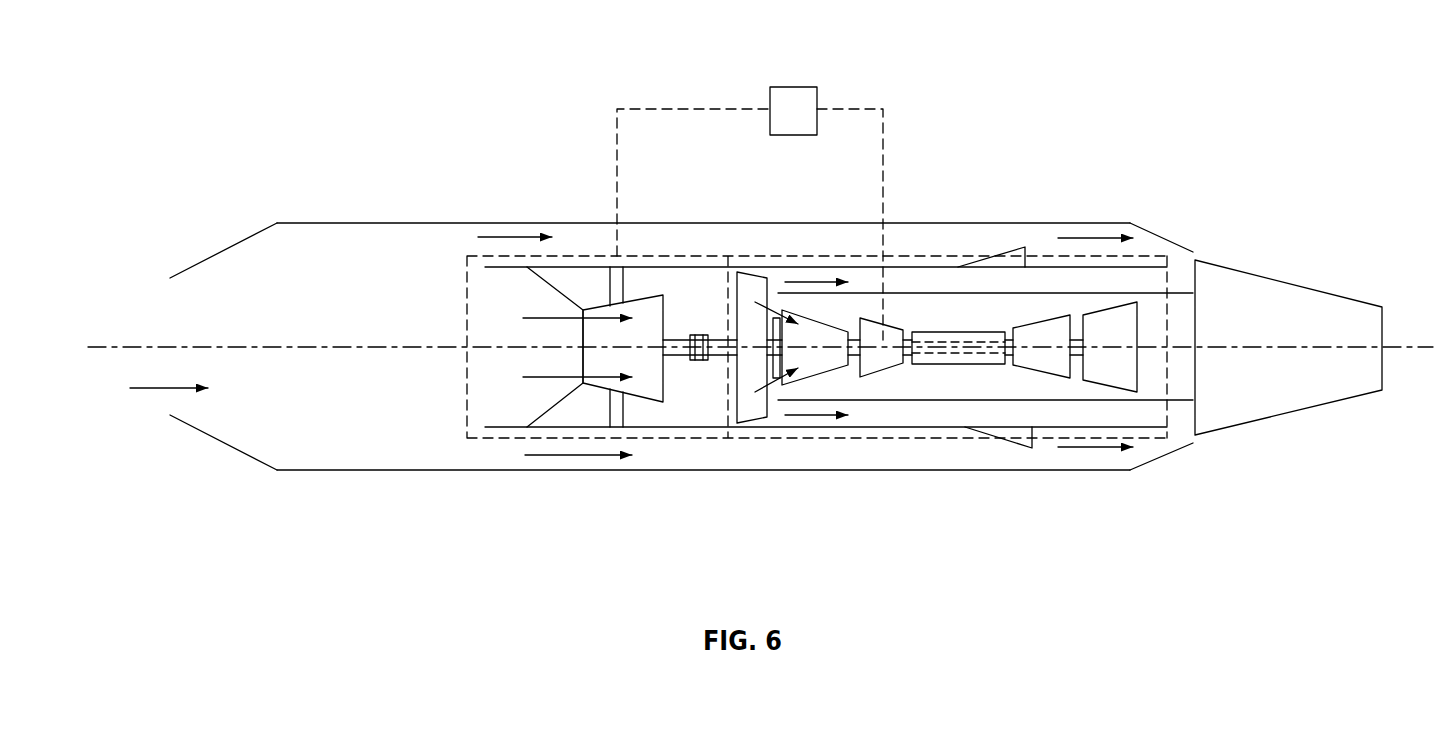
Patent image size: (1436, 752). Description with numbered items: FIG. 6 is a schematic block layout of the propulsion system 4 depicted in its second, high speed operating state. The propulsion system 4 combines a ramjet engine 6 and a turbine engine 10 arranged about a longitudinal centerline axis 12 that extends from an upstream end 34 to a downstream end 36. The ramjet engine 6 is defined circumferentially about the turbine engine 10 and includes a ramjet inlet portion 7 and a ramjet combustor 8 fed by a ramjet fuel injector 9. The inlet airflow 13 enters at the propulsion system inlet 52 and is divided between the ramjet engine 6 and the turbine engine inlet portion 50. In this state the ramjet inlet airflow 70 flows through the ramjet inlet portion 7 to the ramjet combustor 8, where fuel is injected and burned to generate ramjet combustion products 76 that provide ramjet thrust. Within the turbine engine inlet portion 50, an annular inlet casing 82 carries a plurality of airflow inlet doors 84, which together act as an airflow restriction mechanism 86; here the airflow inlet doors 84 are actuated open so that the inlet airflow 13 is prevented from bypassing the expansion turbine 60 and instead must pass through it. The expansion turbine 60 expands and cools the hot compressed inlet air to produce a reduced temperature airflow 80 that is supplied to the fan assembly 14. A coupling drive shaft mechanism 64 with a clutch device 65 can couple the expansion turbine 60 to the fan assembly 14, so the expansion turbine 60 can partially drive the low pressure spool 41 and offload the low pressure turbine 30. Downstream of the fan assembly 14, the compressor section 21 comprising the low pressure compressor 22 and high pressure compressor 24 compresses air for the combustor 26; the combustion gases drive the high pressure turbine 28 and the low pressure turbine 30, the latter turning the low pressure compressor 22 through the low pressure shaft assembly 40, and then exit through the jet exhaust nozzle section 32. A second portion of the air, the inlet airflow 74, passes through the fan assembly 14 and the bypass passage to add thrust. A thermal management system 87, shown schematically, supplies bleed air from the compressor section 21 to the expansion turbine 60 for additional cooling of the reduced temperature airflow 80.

The propulsion system 4 is at (955, 128).
The ramjet engine 6 is at (930, 243).
The ramjet inlet portion 7 is at (770, 243).
The ramjet combustor 8 is at (1045, 243).
The ramjet fuel injector 9 is at (1015, 255).
The turbine engine 10 is at (958, 257).
The longitudinal centerline axis 12 is at (1405, 347).
The inlet airflow 13 is at (160, 390).
The fan assembly 14 is at (742, 400).
The compressor section 21 is at (851, 320).
The low pressure compressor 22 is at (828, 357).
The high pressure compressor 24 is at (885, 360).
The combustor 26 is at (967, 364).
The high pressure turbine 28 is at (1045, 364).
The low pressure turbine 30 is at (1105, 368).
The jet exhaust nozzle section 32 is at (1300, 410).
The upstream end 34 is at (95, 316).
The downstream end 36 is at (1432, 383).
The low pressure shaft assembly 40 is at (868, 343).
The low pressure spool 41 is at (813, 384).
The turbine engine inlet portion 50 is at (500, 257).
The propulsion system inlet 52 is at (160, 287).
The expansion turbine 60 is at (640, 377).
The coupling drive shaft mechanism 64 is at (700, 333).
The clutch device 65 is at (697, 362).
The ramjet inlet airflow 70 is at (527, 237).
The inlet airflow 74 is at (825, 282).
The ramjet combustion products 76 is at (1103, 238).
The reduced temperature airflow 80 is at (542, 318).
The annular inlet casing 82 is at (630, 267).
The airflow inlet doors 84 is at (557, 290).
The airflow restriction mechanism 86 is at (528, 285).
The thermal management system 87 is at (795, 87).